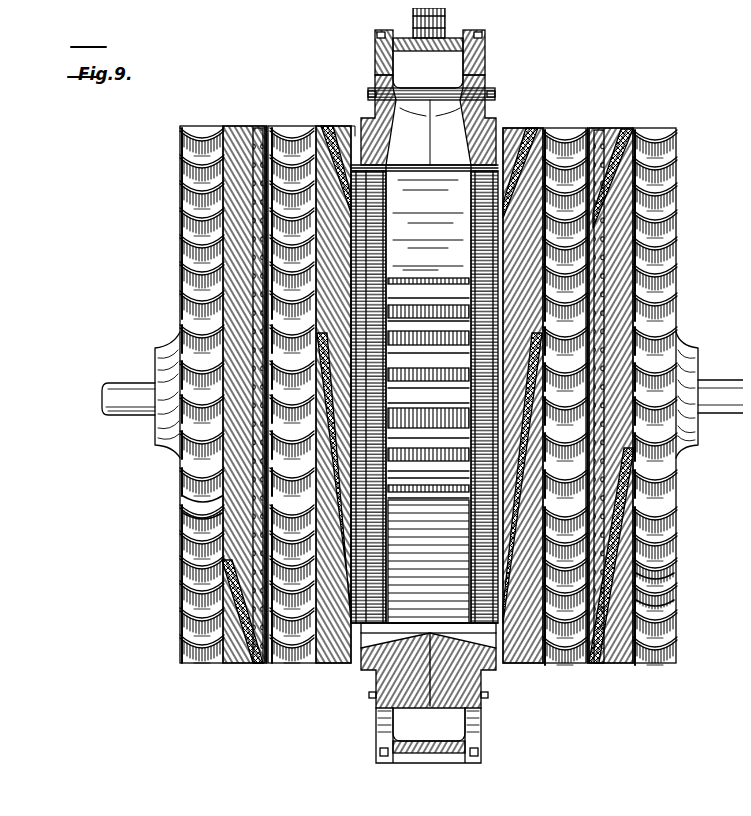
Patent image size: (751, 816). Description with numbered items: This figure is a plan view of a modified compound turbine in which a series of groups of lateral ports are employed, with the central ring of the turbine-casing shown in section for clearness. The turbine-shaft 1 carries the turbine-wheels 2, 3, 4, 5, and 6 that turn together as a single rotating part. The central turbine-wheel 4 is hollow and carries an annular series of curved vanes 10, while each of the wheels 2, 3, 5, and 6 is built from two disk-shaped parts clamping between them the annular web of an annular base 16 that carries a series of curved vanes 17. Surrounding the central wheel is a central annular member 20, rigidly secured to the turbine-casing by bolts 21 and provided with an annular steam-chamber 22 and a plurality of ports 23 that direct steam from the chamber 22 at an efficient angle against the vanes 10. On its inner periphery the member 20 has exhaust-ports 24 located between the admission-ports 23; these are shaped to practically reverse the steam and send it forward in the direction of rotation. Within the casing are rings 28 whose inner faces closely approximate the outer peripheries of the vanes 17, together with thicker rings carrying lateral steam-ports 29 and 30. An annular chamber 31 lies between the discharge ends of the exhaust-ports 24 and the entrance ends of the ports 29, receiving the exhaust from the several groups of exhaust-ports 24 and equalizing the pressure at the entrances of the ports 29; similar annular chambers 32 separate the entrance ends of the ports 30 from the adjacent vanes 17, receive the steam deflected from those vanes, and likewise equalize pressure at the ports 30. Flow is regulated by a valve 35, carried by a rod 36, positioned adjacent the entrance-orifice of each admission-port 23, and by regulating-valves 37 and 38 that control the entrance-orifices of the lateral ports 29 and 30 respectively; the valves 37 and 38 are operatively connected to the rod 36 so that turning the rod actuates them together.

The turbine-shaft 1 is at (118, 387).
The turbine-wheel 2 is at (172, 308).
The turbine-wheel 3 is at (276, 118).
The central turbine-wheel 4 is at (466, 188).
The turbine-wheel 5 is at (566, 120).
The turbine-wheel 6 is at (650, 120).
The curved vanes 10 is at (446, 192).
The annular base 16 is at (190, 442).
The curved vanes 17 is at (188, 215).
The central annular member 20 is at (372, 73).
The bolts 21 is at (474, 24).
The annular steam-chamber 22 is at (432, 60).
The ports 23 is at (412, 116).
The exhaust-ports 24 is at (373, 623).
The rings 28 is at (240, 253).
The steam-ports 29 is at (340, 277).
The steam-ports 30 is at (187, 507).
The annular chamber 31 is at (350, 132).
The annular chambers 32 is at (258, 118).
The valve 35 is at (454, 82).
The rod 36 is at (478, 90).
The regulating-valve 37 is at (502, 170).
The regulating-valve 38 is at (247, 560).